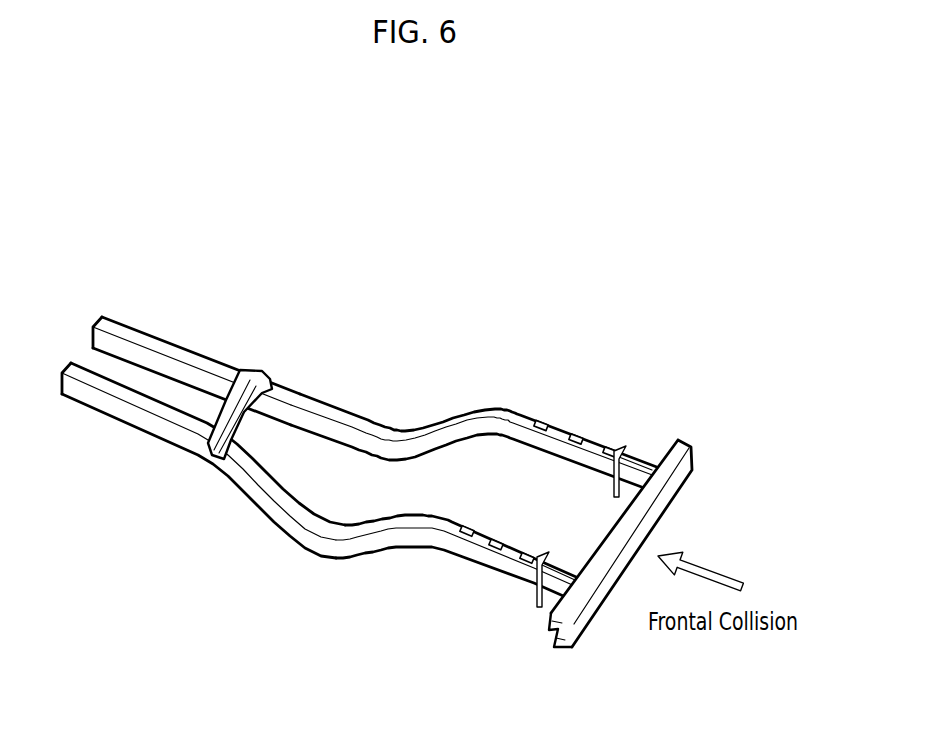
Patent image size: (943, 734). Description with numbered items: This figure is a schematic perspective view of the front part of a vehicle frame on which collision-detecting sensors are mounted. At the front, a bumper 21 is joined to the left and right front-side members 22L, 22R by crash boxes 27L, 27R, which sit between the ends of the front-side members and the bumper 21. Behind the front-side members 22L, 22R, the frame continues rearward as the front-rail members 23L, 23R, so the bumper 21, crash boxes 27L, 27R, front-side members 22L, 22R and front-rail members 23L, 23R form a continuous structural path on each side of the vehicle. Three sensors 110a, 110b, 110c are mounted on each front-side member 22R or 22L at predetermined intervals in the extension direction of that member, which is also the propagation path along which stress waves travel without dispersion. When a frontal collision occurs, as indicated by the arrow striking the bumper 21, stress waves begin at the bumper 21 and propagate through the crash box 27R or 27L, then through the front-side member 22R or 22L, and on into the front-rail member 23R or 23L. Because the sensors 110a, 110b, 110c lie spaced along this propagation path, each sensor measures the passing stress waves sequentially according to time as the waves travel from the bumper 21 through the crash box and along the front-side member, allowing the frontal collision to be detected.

The bumper 21 is at (683, 478).
The front-side member 22L is at (515, 412).
The front-side member 22R is at (455, 530).
The front-rail member 23L is at (164, 358).
The front-rail member 23R is at (140, 420).
The crash box 27L is at (637, 482).
The crash box 27R is at (580, 615).
The sensor 110a is at (612, 447).
The sensor 110b is at (578, 434).
The sensor 110c is at (540, 420).